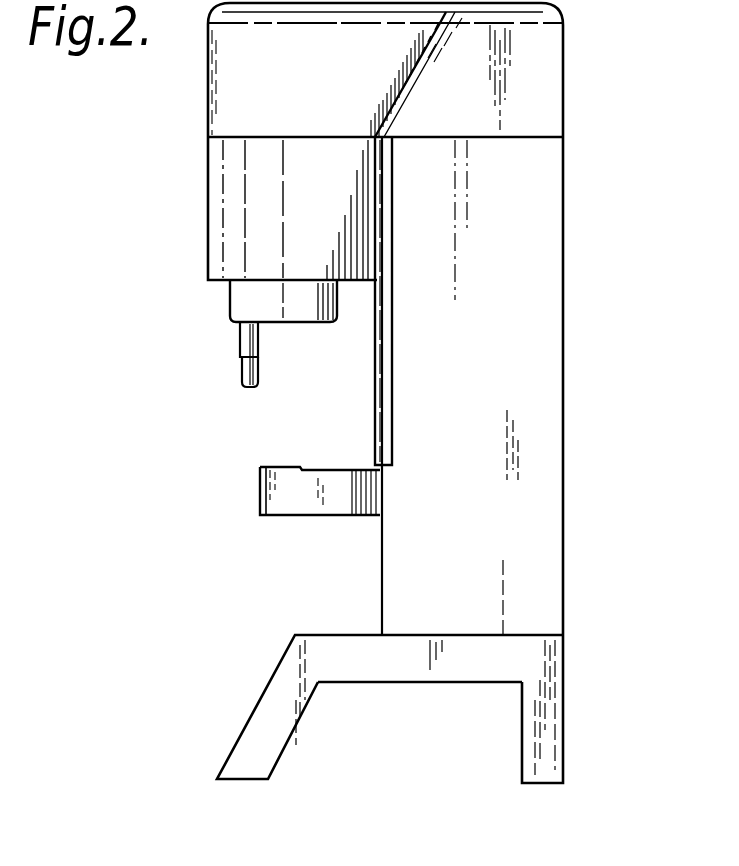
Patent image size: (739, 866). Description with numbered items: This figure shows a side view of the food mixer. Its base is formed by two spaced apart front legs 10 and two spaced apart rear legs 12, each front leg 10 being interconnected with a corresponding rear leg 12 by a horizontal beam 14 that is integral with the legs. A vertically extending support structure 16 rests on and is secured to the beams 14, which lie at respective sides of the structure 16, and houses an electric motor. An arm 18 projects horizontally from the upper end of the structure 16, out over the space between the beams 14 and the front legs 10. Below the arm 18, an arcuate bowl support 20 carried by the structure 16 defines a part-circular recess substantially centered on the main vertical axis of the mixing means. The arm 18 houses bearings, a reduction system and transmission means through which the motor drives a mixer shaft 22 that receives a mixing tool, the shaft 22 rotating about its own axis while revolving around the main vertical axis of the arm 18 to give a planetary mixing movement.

The front legs 10 is at (258, 753).
The rear legs 12 is at (537, 738).
The horizontal beam 14 is at (413, 677).
The support structure 16 is at (513, 298).
The arm 18 is at (227, 212).
The arcuate bowl support 20 is at (282, 494).
The mixer shaft 22 is at (246, 339).